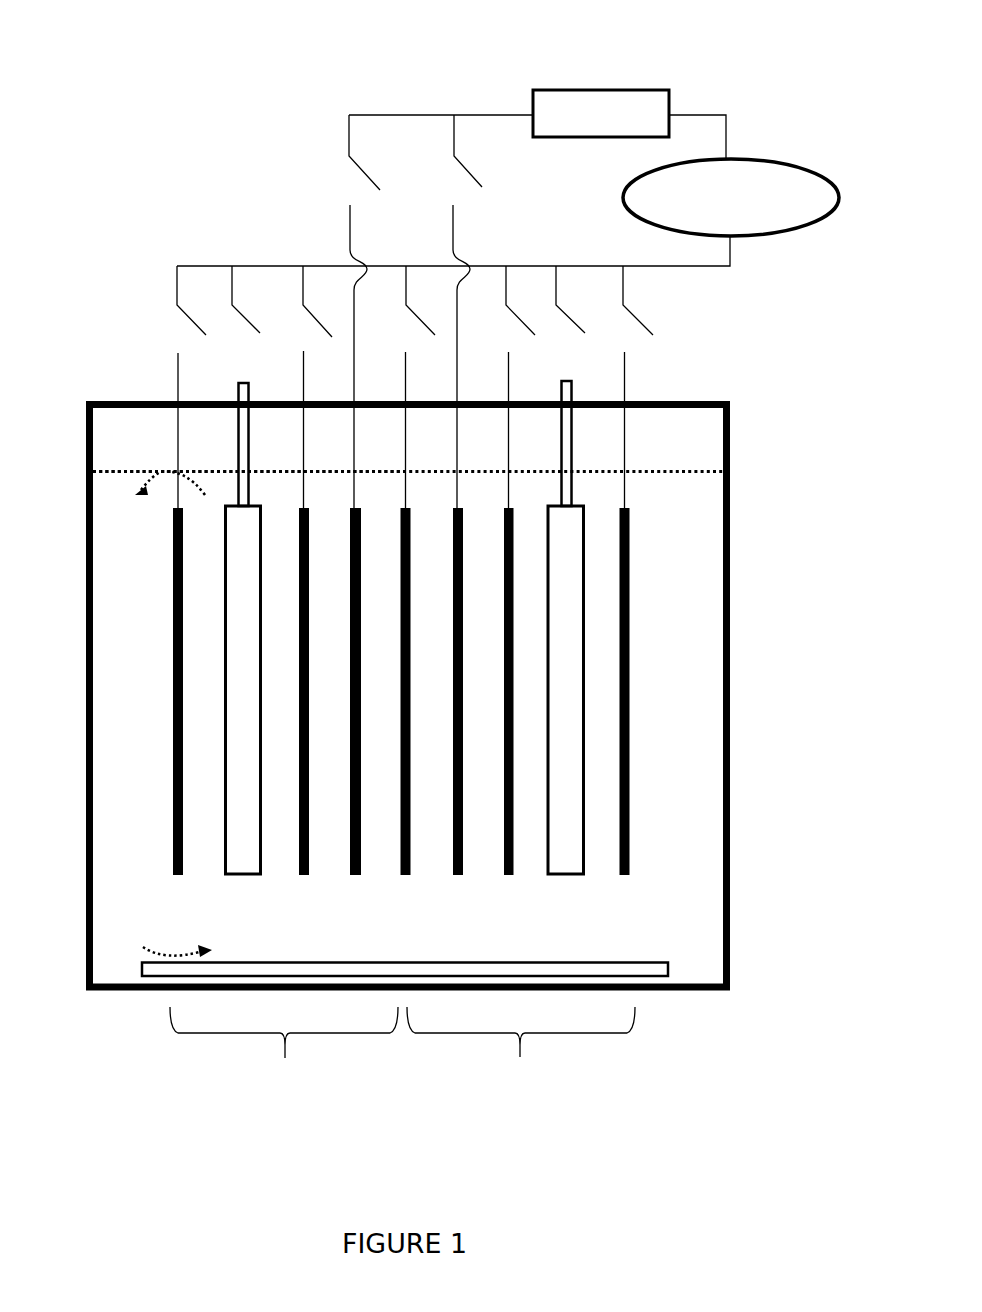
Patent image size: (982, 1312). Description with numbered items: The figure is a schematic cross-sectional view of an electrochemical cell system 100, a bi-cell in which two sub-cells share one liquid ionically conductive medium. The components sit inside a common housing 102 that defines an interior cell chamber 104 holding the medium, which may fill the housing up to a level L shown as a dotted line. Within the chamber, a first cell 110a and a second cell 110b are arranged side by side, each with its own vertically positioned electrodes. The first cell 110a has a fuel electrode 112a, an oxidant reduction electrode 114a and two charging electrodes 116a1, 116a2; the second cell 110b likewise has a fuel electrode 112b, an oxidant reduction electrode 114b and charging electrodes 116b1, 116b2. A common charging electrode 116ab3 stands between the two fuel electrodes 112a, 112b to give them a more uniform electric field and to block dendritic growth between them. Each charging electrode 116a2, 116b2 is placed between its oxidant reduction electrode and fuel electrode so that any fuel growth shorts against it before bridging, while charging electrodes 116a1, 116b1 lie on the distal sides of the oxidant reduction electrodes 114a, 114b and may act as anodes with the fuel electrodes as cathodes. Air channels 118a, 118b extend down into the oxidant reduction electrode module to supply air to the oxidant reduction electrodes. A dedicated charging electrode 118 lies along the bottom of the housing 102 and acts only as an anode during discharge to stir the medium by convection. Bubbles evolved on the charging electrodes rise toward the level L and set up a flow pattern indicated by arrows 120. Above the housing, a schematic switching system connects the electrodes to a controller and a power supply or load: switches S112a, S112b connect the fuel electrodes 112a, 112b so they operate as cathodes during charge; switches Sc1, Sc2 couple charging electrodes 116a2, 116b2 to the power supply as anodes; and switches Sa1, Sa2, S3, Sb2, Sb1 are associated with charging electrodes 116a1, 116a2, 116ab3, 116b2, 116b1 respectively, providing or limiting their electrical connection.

The electrochemical cell system 100 is at (178, 75).
The housing 102 is at (738, 913).
The interior cell chamber 104 is at (706, 755).
The level L is at (115, 459).
The cell 110a is at (284, 1056).
The cell 110b is at (521, 1056).
The fuel electrode 112a is at (355, 715).
The fuel electrode 112b is at (459, 715).
The oxidant reduction electrode 114a is at (243, 690).
The oxidant reduction electrode 114b is at (566, 690).
The charging electrode 116a1 is at (175, 724).
The charging electrode 116a2 is at (304, 724).
The common charging electrode 116ab3 is at (406, 729).
The charging electrode 116b1 is at (624, 724).
The charging electrode 116b2 is at (509, 723).
The dedicated charging electrode 118 is at (653, 968).
The air channel 118a is at (241, 434).
The air channel 118b is at (566, 433).
The arrows 120 is at (157, 714).
The switch S112a is at (345, 311).
The switch S112b is at (449, 311).
The switch Sa1 is at (176, 387).
The switch Sc1 is at (242, 309).
The switch Sa2 is at (301, 387).
The switch S3 is at (413, 387).
The switch Sb2 is at (510, 387).
The switch Sc2 is at (567, 308).
The switch Sb1 is at (624, 387).